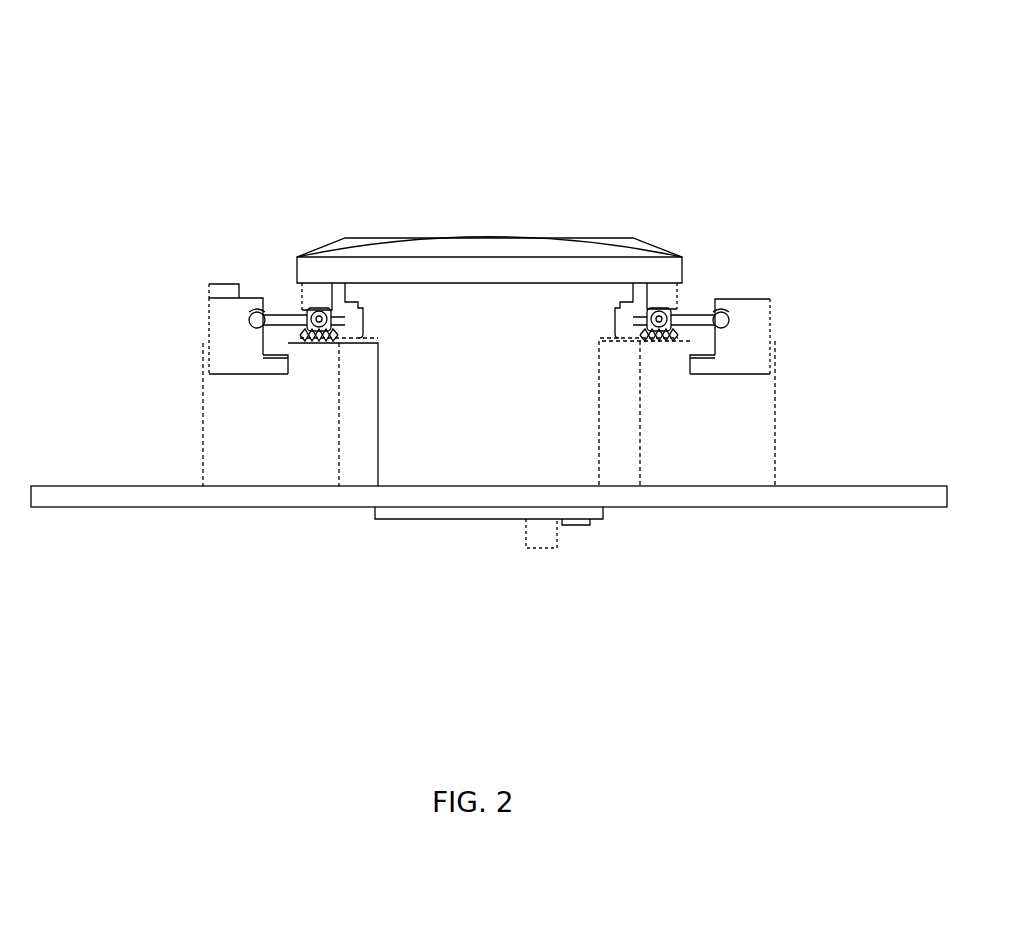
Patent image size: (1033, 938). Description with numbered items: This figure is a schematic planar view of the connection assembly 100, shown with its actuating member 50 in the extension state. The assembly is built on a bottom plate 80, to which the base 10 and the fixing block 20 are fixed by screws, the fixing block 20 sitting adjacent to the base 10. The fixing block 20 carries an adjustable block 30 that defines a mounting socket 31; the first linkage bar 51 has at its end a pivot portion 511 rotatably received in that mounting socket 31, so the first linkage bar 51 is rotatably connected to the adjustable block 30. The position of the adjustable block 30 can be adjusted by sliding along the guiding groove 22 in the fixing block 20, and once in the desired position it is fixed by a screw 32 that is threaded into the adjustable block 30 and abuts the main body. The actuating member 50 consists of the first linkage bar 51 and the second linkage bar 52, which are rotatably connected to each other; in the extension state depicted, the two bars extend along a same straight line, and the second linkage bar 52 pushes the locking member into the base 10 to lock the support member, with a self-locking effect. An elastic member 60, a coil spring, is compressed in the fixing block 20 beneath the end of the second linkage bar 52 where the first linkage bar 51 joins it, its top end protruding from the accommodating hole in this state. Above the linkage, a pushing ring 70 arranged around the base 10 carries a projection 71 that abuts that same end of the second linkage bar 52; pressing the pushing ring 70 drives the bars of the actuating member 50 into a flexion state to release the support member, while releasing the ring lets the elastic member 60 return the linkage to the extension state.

The connection assembly 100 is at (508, 58).
The base 10 is at (447, 390).
The fixing block 20 is at (265, 435).
The guiding groove 22 is at (283, 365).
The adjustable block 30 is at (223, 313).
The mounting socket 31 is at (255, 311).
The screw 32 is at (227, 290).
The actuating member 50 is at (401, 388).
The first linkage bar 51 is at (288, 317).
The pivot portion 511 is at (255, 322).
The second linkage bar 52 is at (348, 290).
The elastic member 60 is at (320, 342).
The pushing ring 70 is at (554, 258).
The projection 71 is at (317, 292).
The bottom plate 80 is at (175, 497).